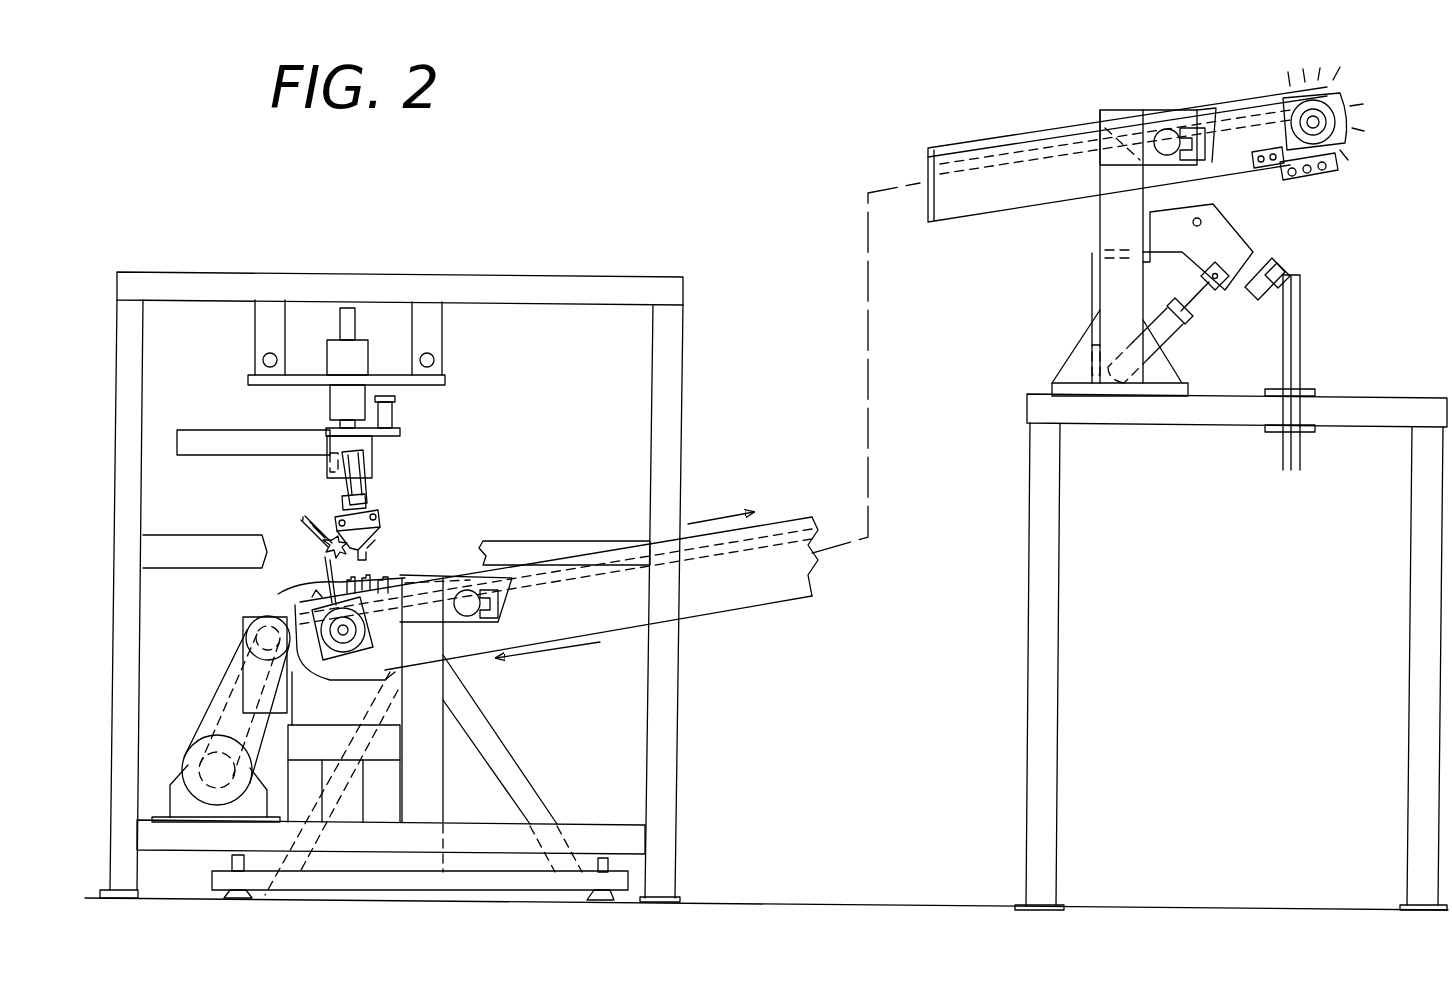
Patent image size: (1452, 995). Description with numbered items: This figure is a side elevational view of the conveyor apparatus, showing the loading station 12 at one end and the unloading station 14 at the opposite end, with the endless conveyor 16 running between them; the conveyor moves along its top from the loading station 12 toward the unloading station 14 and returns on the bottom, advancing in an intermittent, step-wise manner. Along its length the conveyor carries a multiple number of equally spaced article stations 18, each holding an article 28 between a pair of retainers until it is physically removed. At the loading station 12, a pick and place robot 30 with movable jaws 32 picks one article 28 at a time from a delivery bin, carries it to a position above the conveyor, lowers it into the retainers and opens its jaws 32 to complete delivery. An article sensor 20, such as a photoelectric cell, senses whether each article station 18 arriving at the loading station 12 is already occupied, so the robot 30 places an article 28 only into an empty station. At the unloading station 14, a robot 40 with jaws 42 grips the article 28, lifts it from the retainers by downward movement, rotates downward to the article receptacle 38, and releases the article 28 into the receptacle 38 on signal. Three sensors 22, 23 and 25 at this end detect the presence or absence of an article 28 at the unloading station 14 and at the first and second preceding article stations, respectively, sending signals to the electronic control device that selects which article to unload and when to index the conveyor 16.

The loading station 12 is at (402, 586).
The unloading station 14 is at (1281, 183).
The endless conveyor 16 is at (795, 512).
The article station 18 is at (302, 596).
The article sensor 20 is at (322, 550).
The sensor 22 is at (1292, 178).
The sensor 23 is at (1308, 177).
The sensor 25 is at (1330, 170).
The article 28 is at (377, 578).
The robot 30 is at (388, 517).
The jaws 32 is at (368, 530).
The article receptacle 38 is at (1308, 309).
The robot 40 is at (1269, 256).
The jaws 42 is at (1287, 287).